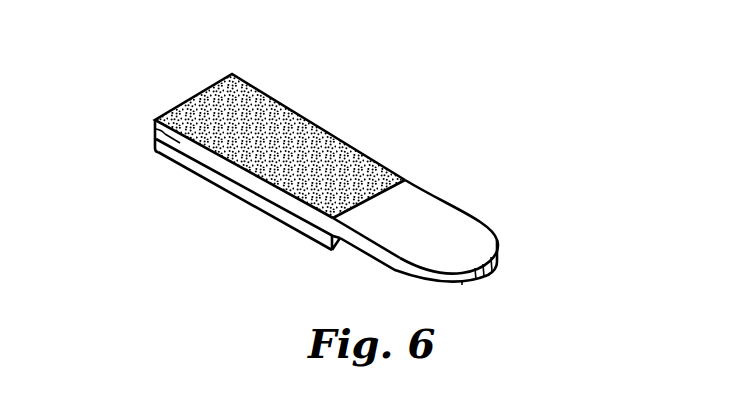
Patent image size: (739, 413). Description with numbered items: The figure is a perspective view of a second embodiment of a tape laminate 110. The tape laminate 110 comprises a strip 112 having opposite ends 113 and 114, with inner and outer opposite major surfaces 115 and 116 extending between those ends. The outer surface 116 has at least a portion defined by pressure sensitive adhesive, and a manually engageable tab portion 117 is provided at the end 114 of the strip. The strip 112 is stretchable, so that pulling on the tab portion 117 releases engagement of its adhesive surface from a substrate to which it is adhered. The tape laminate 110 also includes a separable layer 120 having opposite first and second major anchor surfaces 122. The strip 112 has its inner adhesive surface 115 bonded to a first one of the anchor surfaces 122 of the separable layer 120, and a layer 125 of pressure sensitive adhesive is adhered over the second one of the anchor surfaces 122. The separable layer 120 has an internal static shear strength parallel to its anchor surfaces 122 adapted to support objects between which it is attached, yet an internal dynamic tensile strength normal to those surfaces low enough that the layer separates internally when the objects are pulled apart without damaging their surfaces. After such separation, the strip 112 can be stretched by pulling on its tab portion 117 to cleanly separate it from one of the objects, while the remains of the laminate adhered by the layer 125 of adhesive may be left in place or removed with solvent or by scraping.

The tape laminate 110 is at (489, 115).
The strip 112 is at (505, 230).
The end of the strip 113 is at (187, 102).
The end of the strip 114 is at (493, 267).
The inner major surface 115 is at (180, 148).
The outer major surface 116 is at (348, 152).
The tab portion 117 is at (477, 238).
The separable layer 120 is at (318, 238).
The anchor surfaces 122 is at (155, 123).
The layer of pressure sensitive adhesive 125 is at (247, 204).